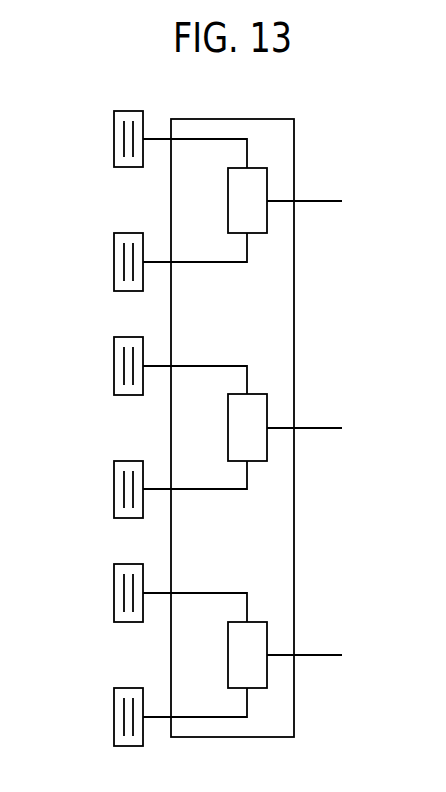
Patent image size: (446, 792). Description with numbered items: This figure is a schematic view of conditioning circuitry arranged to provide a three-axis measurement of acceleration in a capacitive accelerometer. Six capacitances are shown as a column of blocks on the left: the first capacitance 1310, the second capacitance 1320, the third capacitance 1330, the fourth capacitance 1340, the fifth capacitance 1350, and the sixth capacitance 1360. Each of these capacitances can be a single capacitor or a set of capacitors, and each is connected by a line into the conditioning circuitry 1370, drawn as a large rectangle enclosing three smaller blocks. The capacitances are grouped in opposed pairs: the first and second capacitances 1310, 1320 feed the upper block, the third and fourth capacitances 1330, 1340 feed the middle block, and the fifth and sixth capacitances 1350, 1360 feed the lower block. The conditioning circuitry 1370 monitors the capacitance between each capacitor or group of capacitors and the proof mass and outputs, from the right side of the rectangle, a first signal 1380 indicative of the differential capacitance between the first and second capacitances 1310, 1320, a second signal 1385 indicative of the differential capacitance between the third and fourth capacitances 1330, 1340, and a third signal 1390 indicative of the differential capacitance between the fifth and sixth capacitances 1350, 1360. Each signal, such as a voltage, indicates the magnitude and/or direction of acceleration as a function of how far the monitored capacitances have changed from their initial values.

The first capacitance 1310 is at (113, 132).
The second capacitance 1320 is at (113, 259).
The third capacitance 1330 is at (113, 360).
The fourth capacitance 1340 is at (113, 487).
The fifth capacitance 1350 is at (113, 587).
The sixth capacitance 1360 is at (113, 713).
The conditioning circuitry 1370 is at (294, 130).
The first signal 1380 is at (333, 203).
The second signal 1385 is at (333, 430).
The third signal 1390 is at (333, 657).